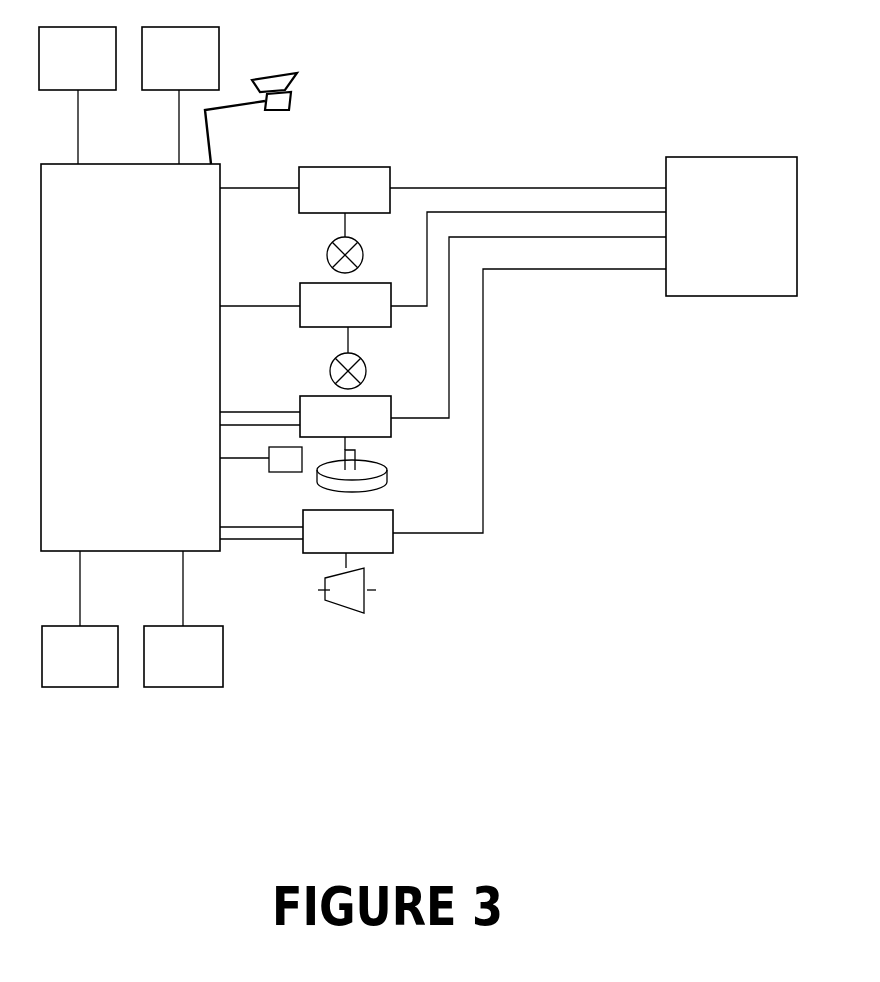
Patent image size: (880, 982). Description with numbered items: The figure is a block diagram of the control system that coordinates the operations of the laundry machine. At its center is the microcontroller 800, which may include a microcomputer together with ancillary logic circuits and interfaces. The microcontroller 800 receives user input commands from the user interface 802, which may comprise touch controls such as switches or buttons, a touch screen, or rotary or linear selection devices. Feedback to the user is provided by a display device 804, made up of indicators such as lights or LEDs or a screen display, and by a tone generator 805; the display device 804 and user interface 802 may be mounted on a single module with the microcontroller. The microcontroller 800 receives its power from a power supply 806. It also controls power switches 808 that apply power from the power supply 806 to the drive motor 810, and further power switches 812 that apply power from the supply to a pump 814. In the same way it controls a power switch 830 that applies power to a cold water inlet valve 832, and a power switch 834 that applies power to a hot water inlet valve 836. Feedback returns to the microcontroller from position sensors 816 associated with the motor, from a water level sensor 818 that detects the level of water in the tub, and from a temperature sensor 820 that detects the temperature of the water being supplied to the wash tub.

The microcontroller 800 is at (130, 357).
The user interface 802 is at (77, 95).
The display device 804 is at (180, 95).
The tone generator 805 is at (278, 72).
The power supply 806 is at (731, 226).
The power switches 808 is at (443, 337).
The drive motor 810 is at (390, 465).
The power switches 812 is at (443, 411).
The pump 814 is at (370, 578).
The position sensors 816 is at (297, 473).
The water level sensor 818 is at (80, 619).
The temperature sensor 820 is at (183, 619).
The power switch 830 is at (443, 190).
The cold water inlet valve 832 is at (328, 247).
The power switch 834 is at (443, 269).
The hot water inlet valve 836 is at (332, 363).